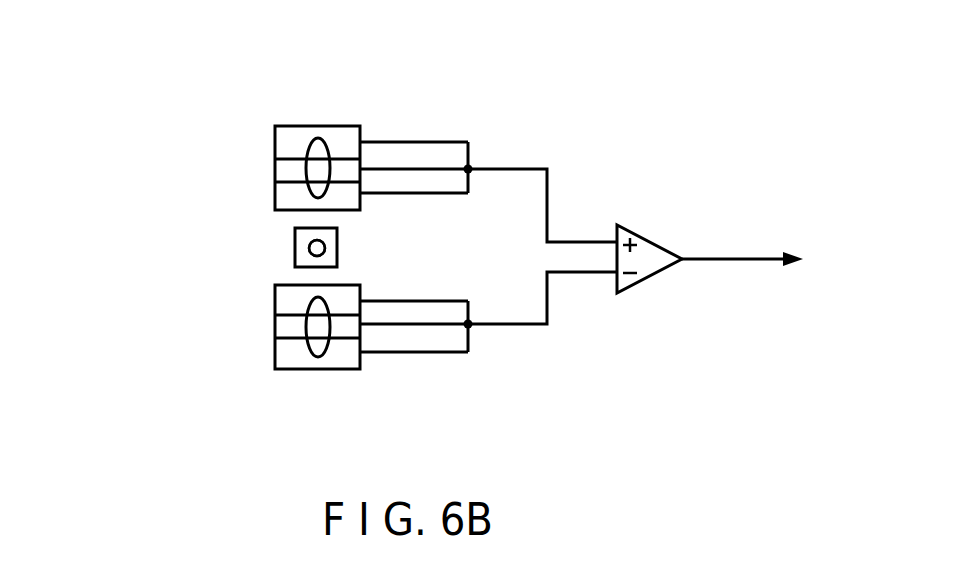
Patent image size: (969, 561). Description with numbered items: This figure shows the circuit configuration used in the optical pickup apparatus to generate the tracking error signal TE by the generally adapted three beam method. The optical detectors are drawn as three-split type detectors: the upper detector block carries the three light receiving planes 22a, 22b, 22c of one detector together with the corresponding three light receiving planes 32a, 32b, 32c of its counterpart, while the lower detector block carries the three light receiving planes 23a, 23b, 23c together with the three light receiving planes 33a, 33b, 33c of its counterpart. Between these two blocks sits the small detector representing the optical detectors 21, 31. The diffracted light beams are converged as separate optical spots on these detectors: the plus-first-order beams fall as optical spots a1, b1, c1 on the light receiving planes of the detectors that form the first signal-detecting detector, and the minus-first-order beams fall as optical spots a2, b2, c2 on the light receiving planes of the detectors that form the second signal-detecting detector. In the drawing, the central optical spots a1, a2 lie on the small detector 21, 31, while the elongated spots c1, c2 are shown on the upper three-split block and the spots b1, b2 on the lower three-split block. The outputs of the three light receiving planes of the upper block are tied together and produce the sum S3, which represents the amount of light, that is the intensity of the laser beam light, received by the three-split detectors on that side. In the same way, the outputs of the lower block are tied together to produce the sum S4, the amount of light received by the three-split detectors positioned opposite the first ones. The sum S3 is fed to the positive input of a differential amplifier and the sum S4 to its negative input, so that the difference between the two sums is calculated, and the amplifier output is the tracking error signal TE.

The optical detector 21 is at (230, 196).
The optical detector 31 is at (295, 238).
The light receiving plane 22a is at (252, 124).
The light receiving plane 22b is at (252, 155).
The light receiving plane 22c is at (252, 171).
The light receiving plane 32a is at (275, 144).
The light receiving plane 32b is at (275, 172).
The light receiving plane 32c is at (275, 200).
The light receiving plane 23a is at (252, 319).
The light receiving plane 23b is at (252, 324).
The light receiving plane 23c is at (252, 340).
The light receiving plane 33a is at (275, 302).
The light receiving plane 33b is at (275, 330).
The light receiving plane 33c is at (275, 357).
The optical spot c1 is at (383, 106).
The optical spot c2 is at (322, 146).
The optical spot a1 is at (393, 236).
The optical spot a2 is at (326, 248).
The optical spot b1 is at (399, 372).
The optical spot b2 is at (325, 350).
The sum S3 is at (541, 182).
The sum S4 is at (541, 317).
The tracking error signal TE is at (768, 256).